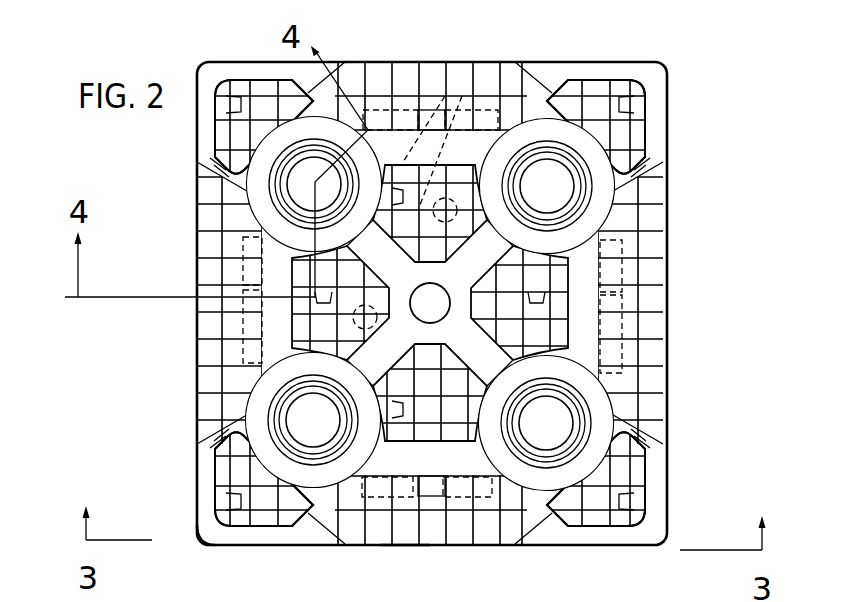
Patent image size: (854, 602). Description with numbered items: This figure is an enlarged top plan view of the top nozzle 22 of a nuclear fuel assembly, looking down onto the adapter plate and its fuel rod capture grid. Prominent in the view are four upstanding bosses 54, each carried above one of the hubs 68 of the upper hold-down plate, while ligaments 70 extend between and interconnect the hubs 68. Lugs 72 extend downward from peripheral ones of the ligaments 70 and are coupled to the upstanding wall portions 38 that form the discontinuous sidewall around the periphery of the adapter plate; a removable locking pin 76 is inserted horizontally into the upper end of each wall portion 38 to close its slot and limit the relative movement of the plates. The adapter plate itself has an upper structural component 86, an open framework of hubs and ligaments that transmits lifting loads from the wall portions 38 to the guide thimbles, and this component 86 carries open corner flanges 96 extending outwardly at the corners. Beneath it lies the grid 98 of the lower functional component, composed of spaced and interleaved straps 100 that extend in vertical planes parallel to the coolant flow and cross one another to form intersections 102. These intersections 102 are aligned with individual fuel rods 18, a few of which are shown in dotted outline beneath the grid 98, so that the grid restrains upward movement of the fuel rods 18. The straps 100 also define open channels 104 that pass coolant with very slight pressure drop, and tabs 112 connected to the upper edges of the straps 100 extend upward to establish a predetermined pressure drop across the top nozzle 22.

The top nozzle 22 is at (183, 63).
The fuel rods 18 is at (492, 104).
The upstanding wall portions 38 is at (375, 108).
The upstanding bosses 54 is at (258, 150).
The hubs 68 is at (258, 208).
The ligaments 70 is at (400, 264).
The lugs 72 is at (528, 112).
The locking pin 76 is at (428, 118).
The upper structural component 86 is at (190, 545).
The open corner flanges 96 is at (216, 76).
The grid 98 is at (400, 553).
The straps 100 is at (616, 108).
The intersections 102 is at (466, 112).
The open channels 104 is at (580, 100).
The tabs 112 is at (237, 475).